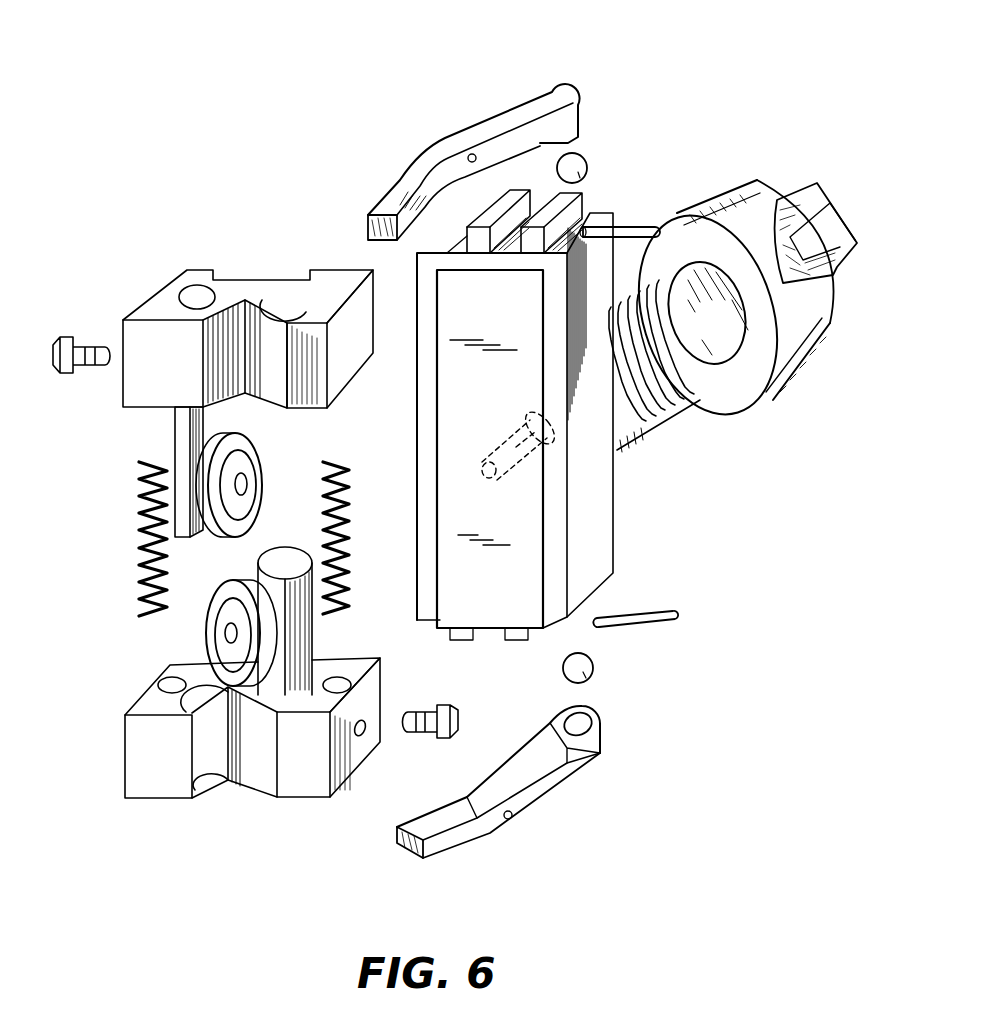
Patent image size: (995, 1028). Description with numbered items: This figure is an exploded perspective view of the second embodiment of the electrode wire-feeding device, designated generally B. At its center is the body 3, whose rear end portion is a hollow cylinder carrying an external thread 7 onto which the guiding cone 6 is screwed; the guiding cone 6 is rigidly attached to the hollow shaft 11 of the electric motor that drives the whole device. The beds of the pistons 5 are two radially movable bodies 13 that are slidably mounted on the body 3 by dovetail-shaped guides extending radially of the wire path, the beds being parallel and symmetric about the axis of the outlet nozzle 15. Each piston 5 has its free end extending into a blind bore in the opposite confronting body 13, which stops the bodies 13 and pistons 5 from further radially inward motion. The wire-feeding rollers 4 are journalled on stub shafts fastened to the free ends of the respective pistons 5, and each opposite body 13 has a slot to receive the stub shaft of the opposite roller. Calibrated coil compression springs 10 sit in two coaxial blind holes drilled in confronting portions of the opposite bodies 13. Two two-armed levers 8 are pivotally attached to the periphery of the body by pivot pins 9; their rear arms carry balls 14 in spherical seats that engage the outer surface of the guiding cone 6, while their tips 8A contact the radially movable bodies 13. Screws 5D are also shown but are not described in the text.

The electrode wire-feeding device B is at (445, 105).
The body 3 is at (452, 412).
The wire-feeding roller 4 is at (262, 488).
The piston 5 is at (178, 432).
The screw 5D is at (77, 342).
The guiding cone 6 is at (765, 180).
The external thread 7 is at (652, 425).
The two-armed lever 8 is at (560, 101).
The tip of two-armed lever 8A is at (392, 200).
The pivot pin 9 is at (640, 226).
The calibrated coil compression spring 10 is at (142, 488).
The hollow shaft 11 is at (818, 290).
The radially movable body 13 is at (196, 278).
The ball 14 is at (588, 171).
The outlet nozzle 15 is at (492, 468).